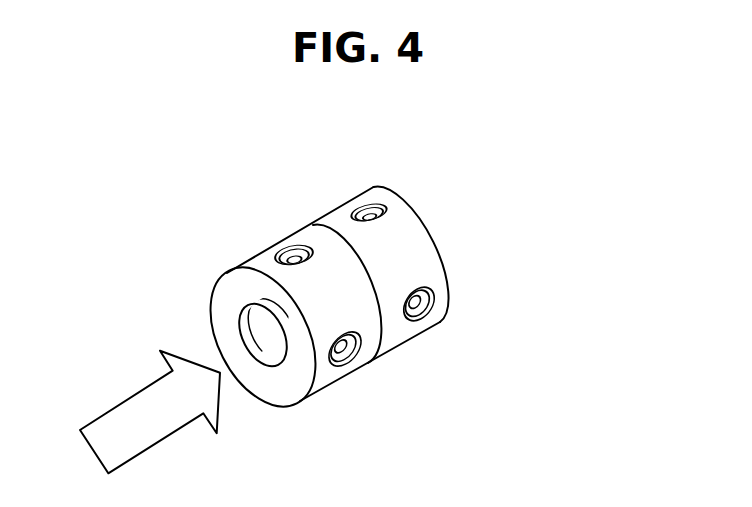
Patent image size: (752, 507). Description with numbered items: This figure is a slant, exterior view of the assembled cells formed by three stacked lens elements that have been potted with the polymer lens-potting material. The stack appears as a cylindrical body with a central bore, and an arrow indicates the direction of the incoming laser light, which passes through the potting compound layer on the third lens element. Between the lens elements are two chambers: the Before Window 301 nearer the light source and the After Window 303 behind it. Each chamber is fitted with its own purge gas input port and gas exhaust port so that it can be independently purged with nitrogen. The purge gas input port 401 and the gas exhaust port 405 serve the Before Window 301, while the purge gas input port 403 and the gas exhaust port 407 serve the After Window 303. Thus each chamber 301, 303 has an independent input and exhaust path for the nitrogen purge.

The Before Window chamber 301 is at (324, 376).
The After Window chamber 303 is at (418, 252).
The purge gas input port 401 is at (273, 248).
The purge gas input port 403 is at (351, 207).
The gas exhaust port 405 is at (366, 362).
The gas exhaust port 407 is at (433, 315).